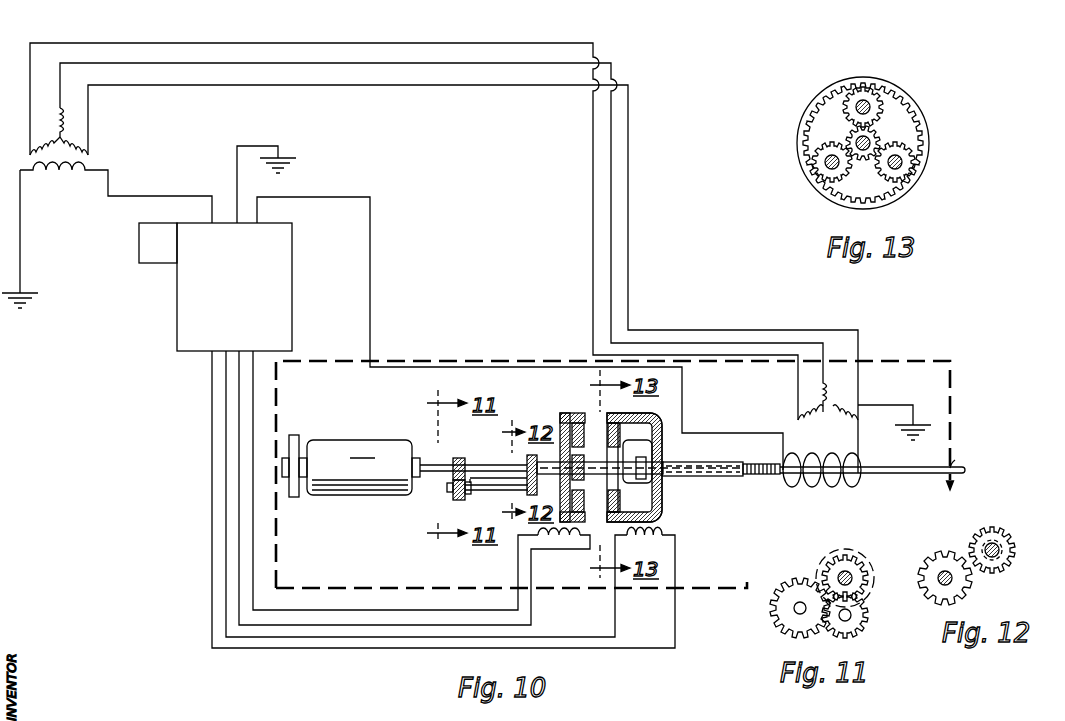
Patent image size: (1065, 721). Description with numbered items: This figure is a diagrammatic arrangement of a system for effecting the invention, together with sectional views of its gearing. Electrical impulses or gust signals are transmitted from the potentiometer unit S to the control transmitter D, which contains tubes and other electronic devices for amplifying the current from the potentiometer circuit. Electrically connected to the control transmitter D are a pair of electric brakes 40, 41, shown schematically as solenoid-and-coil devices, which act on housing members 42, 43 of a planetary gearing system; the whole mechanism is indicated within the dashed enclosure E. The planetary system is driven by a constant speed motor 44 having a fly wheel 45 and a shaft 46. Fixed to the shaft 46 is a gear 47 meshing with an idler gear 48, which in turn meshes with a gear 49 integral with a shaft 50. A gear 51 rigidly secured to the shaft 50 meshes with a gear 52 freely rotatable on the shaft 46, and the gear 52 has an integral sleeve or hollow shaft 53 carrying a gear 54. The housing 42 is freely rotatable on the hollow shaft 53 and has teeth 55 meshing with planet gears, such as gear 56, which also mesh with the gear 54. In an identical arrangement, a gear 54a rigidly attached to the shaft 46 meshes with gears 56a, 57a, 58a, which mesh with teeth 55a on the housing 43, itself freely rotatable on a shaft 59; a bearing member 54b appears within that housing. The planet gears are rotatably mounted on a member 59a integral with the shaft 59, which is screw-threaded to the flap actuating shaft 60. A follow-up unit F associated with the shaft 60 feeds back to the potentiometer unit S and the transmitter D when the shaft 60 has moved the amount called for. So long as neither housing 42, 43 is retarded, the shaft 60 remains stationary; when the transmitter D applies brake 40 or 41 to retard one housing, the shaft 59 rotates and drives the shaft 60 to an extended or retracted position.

In FIG. 10, the potentiometer unit S is at (88, 145).
In FIG. 10, the control transmitter D is at (177, 300).
In FIG. 10, the actuator enclosure E is at (340, 588).
In FIG. 10, the follow-up unit F is at (846, 408).
In FIG. 10, the electric brake 40 is at (538, 536).
In FIG. 10, the electric brake 41 is at (663, 533).
In FIG. 10, the housing member 42 is at (566, 403).
In FIG. 10, the housing member 43 is at (666, 407).
In FIG. 13, the housing member 43 is at (918, 110).
In FIG. 10, the constant speed motor 44 is at (327, 496).
In FIG. 10, the fly wheel 45 is at (292, 497).
In FIG. 10, the shaft 46 is at (434, 478).
In FIG. 11, the shaft 46 is at (852, 577).
In FIG. 12, the shaft 46 is at (998, 548).
In FIG. 13, the shaft 46 is at (856, 140).
In FIG. 10, the gear 47 is at (468, 449).
In FIG. 11, the gear 47 is at (846, 562).
In FIG. 10, the idler gear 48 is at (458, 500).
In FIG. 11, the idler gear 48 is at (852, 615).
In FIG. 10, the gear 49 is at (447, 484).
In FIG. 11, the gear 49 is at (775, 622).
In FIG. 10, the shaft 50 is at (470, 492).
In FIG. 11, the shaft 50 is at (792, 602).
In FIG. 12, the shaft 50 is at (940, 578).
In FIG. 10, the gear 51 is at (513, 486).
In FIG. 12, the gear 51 is at (970, 590).
In FIG. 10, the gear 52 is at (525, 468).
In FIG. 11, the gear 52 is at (836, 551).
In FIG. 12, the gear 52 is at (1014, 552).
In FIG. 10, the hollow shaft 53 is at (535, 460).
In FIG. 12, the hollow shaft 53 is at (968, 535).
In FIG. 10, the gear 54 is at (584, 462).
In FIG. 13, the gear 54a is at (876, 142).
In FIG. 10, the bearing block 54b is at (636, 456).
In FIG. 10, the teeth 55 is at (590, 500).
In FIG. 10, the teeth 55a is at (620, 505).
In FIG. 13, the teeth 55a is at (830, 95).
In FIG. 10, the gear 56 is at (584, 430).
In FIG. 10, the gear 56a is at (620, 432).
In FIG. 13, the gear 56a is at (872, 96).
In FIG. 13, the gear 57a is at (910, 176).
In FIG. 13, the gear 58a is at (815, 170).
In FIG. 10, the shaft 59 is at (710, 463).
In FIG. 10, the member 59a is at (664, 450).
In FIG. 10, the flap actuating shaft 60 is at (965, 459).